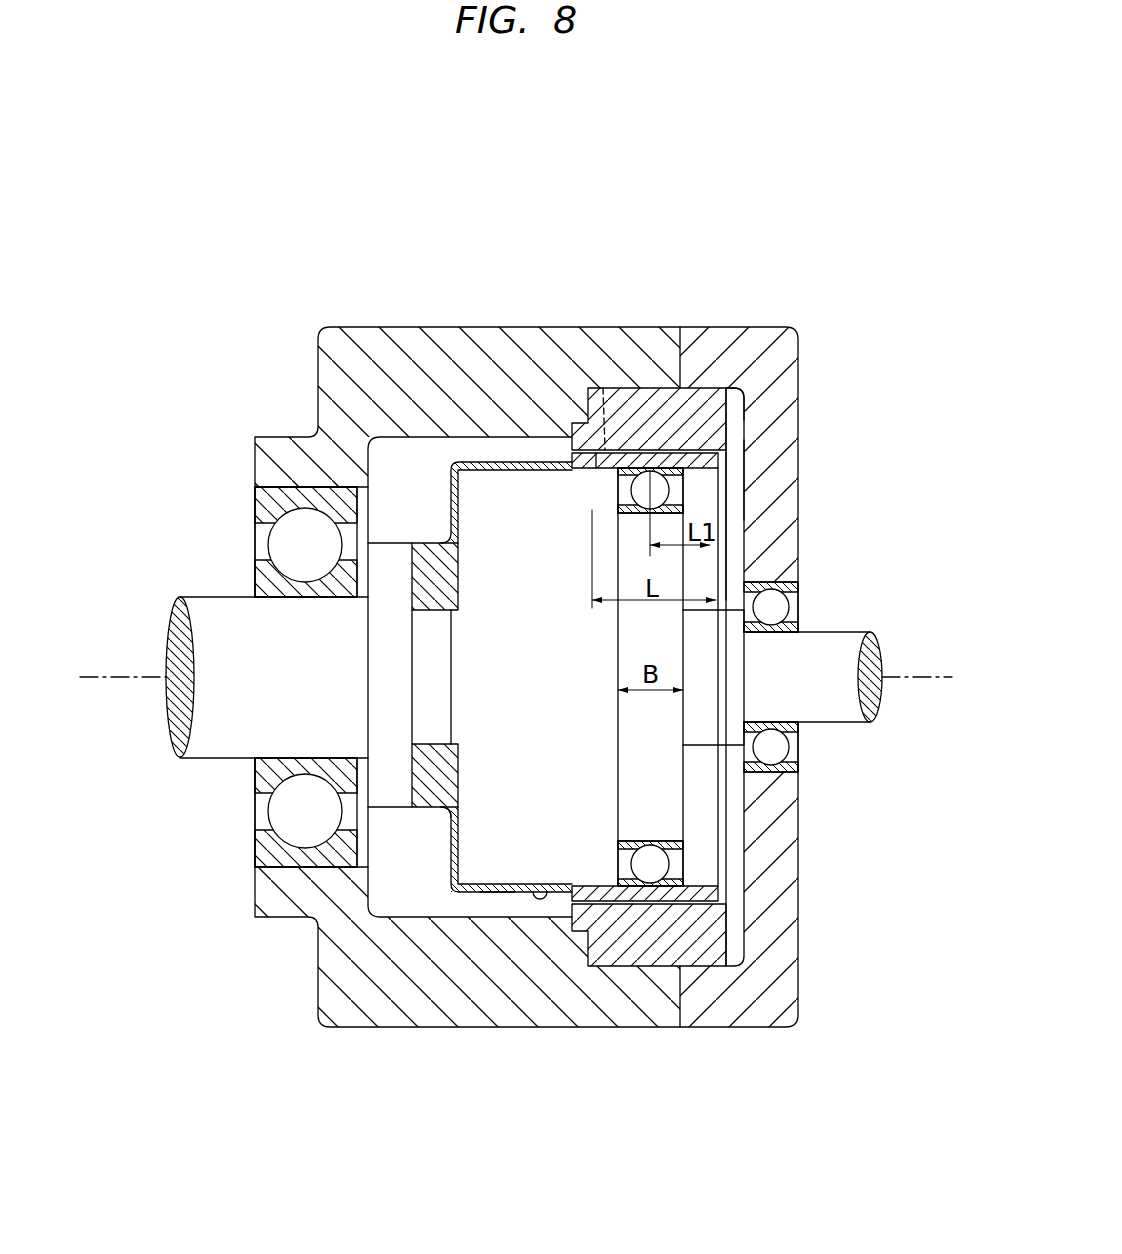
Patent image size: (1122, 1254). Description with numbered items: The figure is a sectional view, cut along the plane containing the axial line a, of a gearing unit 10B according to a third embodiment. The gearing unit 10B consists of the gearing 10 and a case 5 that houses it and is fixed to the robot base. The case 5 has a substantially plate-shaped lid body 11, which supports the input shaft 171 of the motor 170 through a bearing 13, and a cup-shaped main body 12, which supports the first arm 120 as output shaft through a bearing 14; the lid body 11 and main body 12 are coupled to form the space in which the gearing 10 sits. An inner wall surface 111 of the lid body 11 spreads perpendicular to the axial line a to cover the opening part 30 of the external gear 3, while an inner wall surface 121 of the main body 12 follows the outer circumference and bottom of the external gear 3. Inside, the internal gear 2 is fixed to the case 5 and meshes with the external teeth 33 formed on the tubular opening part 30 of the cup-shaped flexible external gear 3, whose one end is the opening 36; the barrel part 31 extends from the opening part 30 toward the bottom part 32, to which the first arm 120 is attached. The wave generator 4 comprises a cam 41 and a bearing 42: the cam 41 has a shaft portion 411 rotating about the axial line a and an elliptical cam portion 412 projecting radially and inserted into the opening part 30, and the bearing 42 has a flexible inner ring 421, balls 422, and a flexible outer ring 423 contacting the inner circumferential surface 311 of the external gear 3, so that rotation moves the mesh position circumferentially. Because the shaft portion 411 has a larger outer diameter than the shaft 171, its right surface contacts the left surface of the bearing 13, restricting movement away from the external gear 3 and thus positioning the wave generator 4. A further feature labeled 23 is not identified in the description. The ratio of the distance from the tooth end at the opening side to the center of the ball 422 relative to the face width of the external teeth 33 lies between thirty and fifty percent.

The gearing unit 10B is at (517, 605).
The case 5 is at (768, 327).
The main body 12 is at (327, 337).
The lid body 11 is at (788, 373).
The inner wall surface 111 is at (738, 432).
The opening part 30 is at (703, 481).
The opening 36 is at (737, 480).
The internal gear 2 is at (648, 376).
The parting surface 23 is at (603, 388).
The external teeth 33 is at (688, 450).
The inner circumferential surface 311 is at (607, 486).
The gearing 10 is at (430, 448).
The external gear 3 is at (512, 450).
The bottom part 32 is at (443, 851).
The barrel part 31 is at (497, 893).
The inner wall surface 121 is at (541, 905).
The bearing 14 is at (258, 505).
The first arm 120 is at (212, 622).
The bearing 13 is at (797, 587).
The shaft 171 is at (833, 643).
The motor 170 is at (887, 632).
The axial line a is at (937, 675).
The wave generator 4 is at (769, 802).
The cam 41 is at (772, 677).
The shaft portion 411 is at (712, 727).
The cam portion 412 is at (662, 792).
The bearing 42 is at (694, 803).
The inner ring 421 is at (685, 848).
The balls 422 is at (654, 870).
The outer ring 423 is at (630, 885).